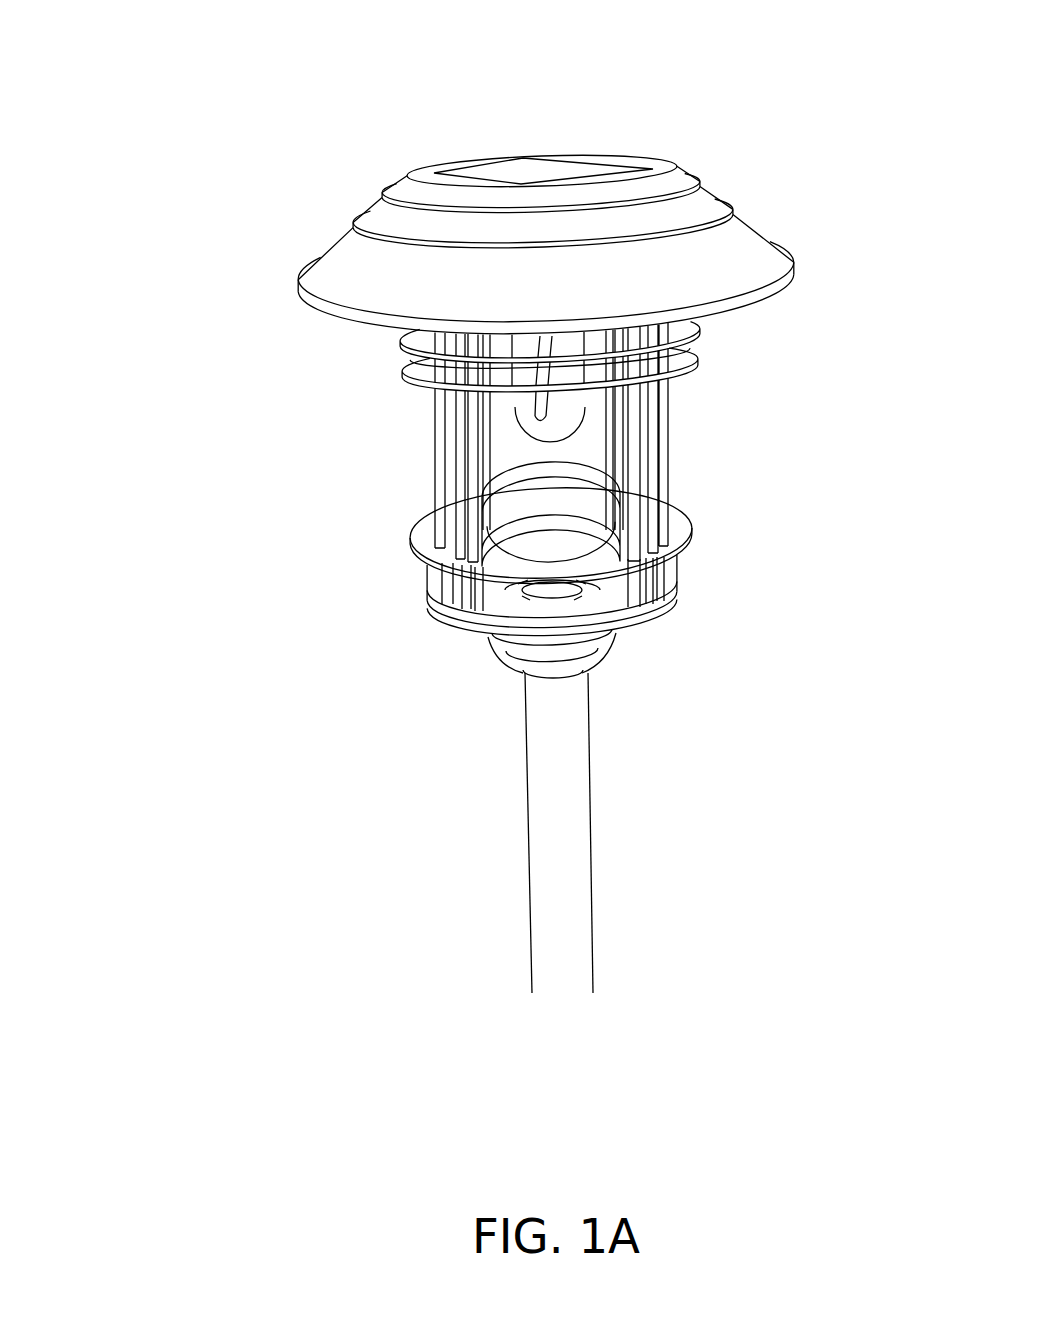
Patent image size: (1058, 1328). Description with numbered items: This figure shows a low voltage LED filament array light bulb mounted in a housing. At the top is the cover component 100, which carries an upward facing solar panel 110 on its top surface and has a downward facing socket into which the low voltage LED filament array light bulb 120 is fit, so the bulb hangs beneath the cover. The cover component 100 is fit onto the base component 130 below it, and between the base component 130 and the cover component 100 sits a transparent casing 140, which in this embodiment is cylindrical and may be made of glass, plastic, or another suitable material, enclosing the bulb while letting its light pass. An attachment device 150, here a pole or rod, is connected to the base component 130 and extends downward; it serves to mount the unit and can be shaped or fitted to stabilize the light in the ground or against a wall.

The cover component 100 is at (732, 243).
The solar panel 110 is at (547, 170).
The low voltage LED filament array light bulb 120 is at (547, 421).
The base component 130 is at (437, 528).
The transparent casing 140 is at (565, 497).
The attachment device 150 is at (565, 787).